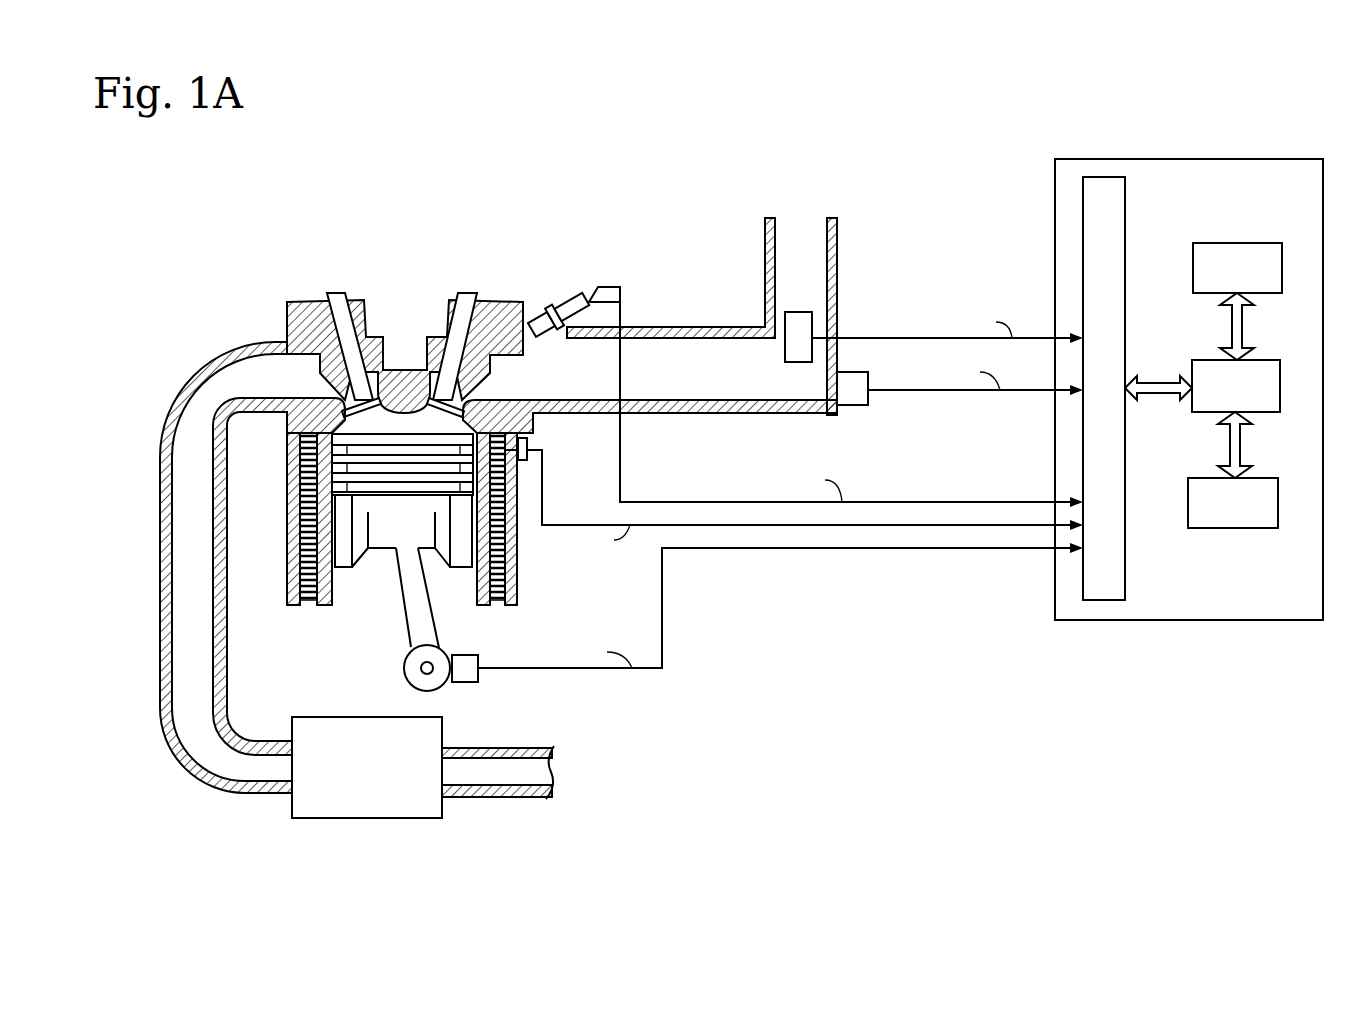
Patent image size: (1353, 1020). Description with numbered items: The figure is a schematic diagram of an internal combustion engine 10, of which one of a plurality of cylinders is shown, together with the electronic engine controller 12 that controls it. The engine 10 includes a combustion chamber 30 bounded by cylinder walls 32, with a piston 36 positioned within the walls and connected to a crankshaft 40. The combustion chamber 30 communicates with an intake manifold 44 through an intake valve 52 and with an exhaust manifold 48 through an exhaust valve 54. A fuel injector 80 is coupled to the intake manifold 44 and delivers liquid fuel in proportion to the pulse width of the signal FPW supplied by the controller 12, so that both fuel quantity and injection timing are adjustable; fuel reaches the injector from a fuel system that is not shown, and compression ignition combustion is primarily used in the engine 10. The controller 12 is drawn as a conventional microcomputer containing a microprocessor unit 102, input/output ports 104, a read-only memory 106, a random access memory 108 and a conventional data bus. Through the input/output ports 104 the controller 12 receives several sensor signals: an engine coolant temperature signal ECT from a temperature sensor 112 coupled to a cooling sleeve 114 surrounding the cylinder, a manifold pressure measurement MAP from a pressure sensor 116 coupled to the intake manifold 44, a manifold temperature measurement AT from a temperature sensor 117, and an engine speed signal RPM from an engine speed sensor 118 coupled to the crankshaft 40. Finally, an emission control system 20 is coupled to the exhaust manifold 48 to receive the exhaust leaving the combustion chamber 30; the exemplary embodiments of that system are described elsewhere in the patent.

The internal combustion engine 10 is at (266, 172).
The electronic engine controller 12 is at (1283, 159).
The emission control system 20 is at (393, 818).
The combustion chamber 30 is at (392, 427).
The cylinder walls 32 is at (332, 588).
The piston 36 is at (405, 535).
The crankshaft 40 is at (407, 670).
The intake manifold 44 is at (690, 386).
The exhaust manifold 48 is at (172, 412).
The intake valve 52 is at (462, 393).
The exhaust valve 54 is at (345, 393).
The fuel injector 80 is at (554, 303).
The microprocessor unit 102 is at (1253, 360).
The input/output ports 104 is at (1055, 195).
The read-only memory 106 is at (1253, 243).
The random access memory 108 is at (1250, 478).
The temperature sensor 112 is at (528, 445).
The cooling sleeve 114 is at (496, 572).
The pressure sensor 116 is at (800, 362).
The temperature sensor 117 is at (850, 405).
The engine speed sensor 118 is at (466, 655).